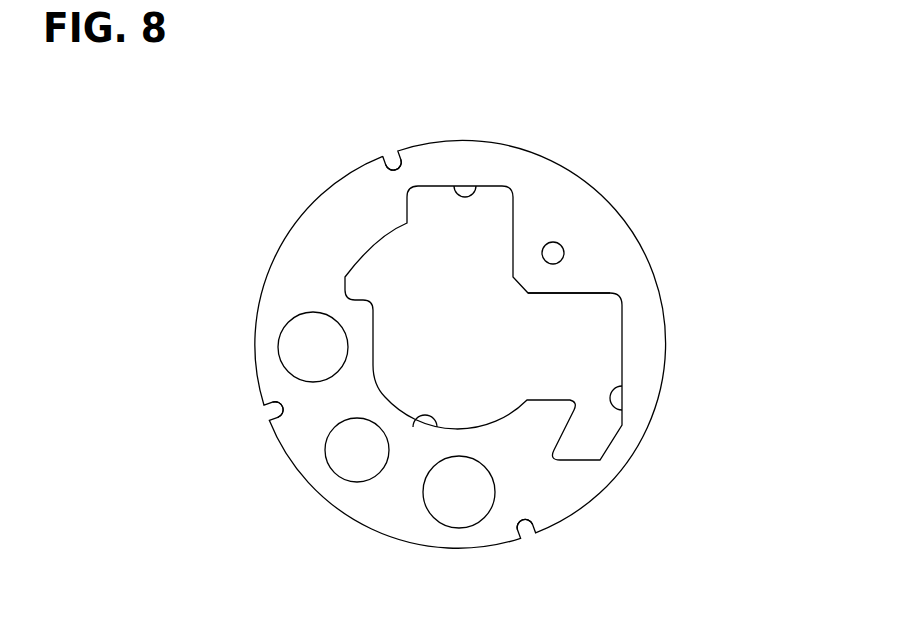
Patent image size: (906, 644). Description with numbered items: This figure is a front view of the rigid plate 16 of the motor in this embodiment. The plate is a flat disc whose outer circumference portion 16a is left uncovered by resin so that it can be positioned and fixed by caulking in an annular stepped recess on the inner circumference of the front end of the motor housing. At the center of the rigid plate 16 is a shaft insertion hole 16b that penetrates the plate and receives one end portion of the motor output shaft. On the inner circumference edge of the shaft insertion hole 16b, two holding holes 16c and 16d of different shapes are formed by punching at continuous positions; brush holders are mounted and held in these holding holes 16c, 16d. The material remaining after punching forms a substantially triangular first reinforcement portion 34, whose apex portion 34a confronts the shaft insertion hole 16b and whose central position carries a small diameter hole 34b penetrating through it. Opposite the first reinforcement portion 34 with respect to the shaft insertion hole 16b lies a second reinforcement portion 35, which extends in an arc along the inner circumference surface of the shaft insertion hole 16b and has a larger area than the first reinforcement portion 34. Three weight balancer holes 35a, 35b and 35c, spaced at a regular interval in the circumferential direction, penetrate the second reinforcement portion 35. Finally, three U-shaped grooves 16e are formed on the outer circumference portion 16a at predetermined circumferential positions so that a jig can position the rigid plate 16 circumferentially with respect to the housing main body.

The rigid plate 16 is at (662, 297).
The outer circumference portion 16a is at (552, 182).
The shaft insertion hole 16b is at (435, 418).
The holding hole 16c is at (482, 187).
The holding hole 16d is at (618, 408).
The U-shaped grooves 16e is at (390, 167).
The first reinforcement portion 34 is at (550, 282).
The apex portion 34a is at (518, 298).
The small diameter hole 34b is at (553, 253).
The second reinforcement portion 35 is at (337, 405).
The weight balancer hole 35a is at (457, 507).
The weight balancer hole 35b is at (343, 465).
The weight balancer hole 35c is at (300, 348).